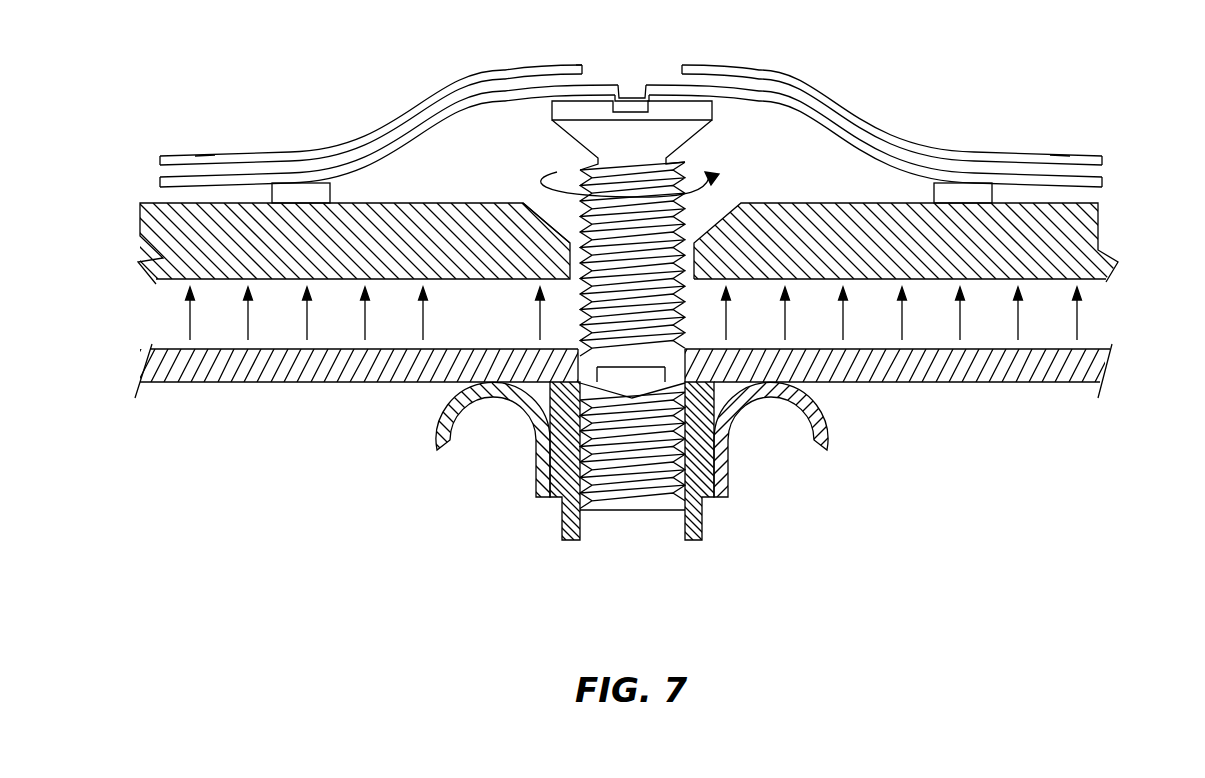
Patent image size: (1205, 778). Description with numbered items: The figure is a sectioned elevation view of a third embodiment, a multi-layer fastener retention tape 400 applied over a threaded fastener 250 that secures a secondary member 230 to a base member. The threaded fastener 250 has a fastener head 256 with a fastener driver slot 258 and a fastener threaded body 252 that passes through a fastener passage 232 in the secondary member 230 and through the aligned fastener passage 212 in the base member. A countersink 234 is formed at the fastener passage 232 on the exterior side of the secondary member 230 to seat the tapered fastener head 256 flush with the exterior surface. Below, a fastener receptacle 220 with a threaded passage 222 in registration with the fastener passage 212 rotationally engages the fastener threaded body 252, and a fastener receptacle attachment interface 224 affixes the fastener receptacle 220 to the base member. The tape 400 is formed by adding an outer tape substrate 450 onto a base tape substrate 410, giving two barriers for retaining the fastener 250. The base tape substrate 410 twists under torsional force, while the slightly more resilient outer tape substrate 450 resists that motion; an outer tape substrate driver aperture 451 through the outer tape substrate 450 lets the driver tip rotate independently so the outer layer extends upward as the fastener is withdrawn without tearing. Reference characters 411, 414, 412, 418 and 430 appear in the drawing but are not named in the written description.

The multi-layer fastener retention tape 400 is at (372, 92).
The outer tape substrate 450 is at (821, 98).
The fastener head 256 is at (563, 98).
The fastener driver slot 258 is at (640, 94).
The outer tape substrate driver aperture 451 is at (583, 72).
The base tape substrate 410 is at (840, 125).
The depression of lower layer in screw slot 411 is at (629, 94).
The first end of membrane 414 is at (160, 182).
The second end of membrane 412 is at (1110, 178).
The membrane top surface 418 is at (205, 150).
The adhesive pad 430 is at (296, 193).
The threaded fastener 250 is at (556, 147).
The fastener threaded body 252 is at (632, 318).
The fastener passage 232 is at (709, 177).
The countersink 234 is at (548, 215).
The secondary member 230 is at (172, 242).
The fastener receptacle 220 is at (172, 368).
The threaded passage 222 is at (568, 517).
The fastener passage 212 is at (582, 400).
The fastener receptacle attachment interface 224 is at (835, 446).